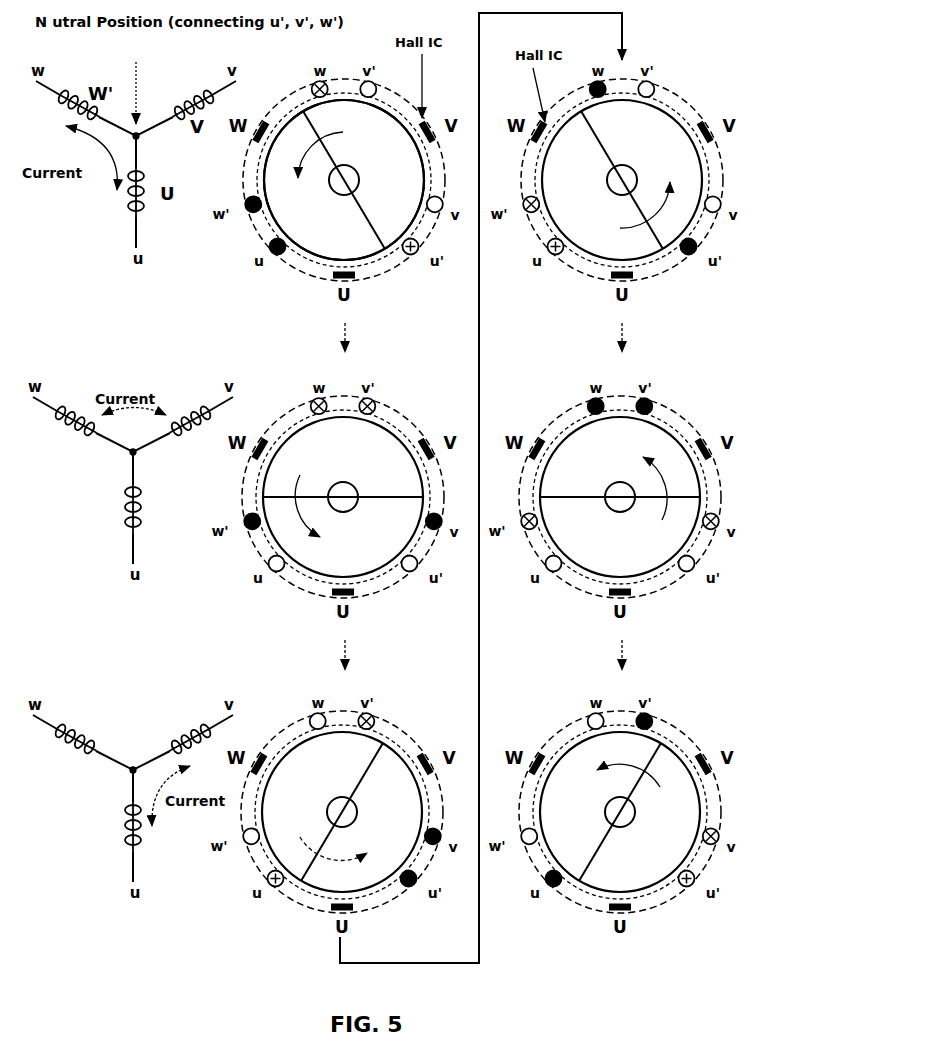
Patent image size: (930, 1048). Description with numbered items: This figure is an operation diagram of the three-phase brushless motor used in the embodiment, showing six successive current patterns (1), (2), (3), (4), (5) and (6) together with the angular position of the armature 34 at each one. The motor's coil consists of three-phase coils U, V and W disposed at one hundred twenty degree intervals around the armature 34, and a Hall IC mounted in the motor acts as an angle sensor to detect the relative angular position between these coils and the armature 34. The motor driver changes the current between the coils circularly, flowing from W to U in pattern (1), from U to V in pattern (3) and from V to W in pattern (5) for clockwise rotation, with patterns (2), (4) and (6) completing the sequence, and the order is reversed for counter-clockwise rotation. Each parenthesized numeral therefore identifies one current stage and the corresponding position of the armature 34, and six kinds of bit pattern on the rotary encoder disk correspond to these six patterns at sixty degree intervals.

The armature 34 is at (344, 148).
The current pattern 1 is at (335, 170).
The current pattern 2 is at (334, 501).
The current pattern 3 is at (333, 816).
The current pattern 4 is at (613, 184).
The current pattern 5 is at (611, 501).
The current pattern 6 is at (611, 816).